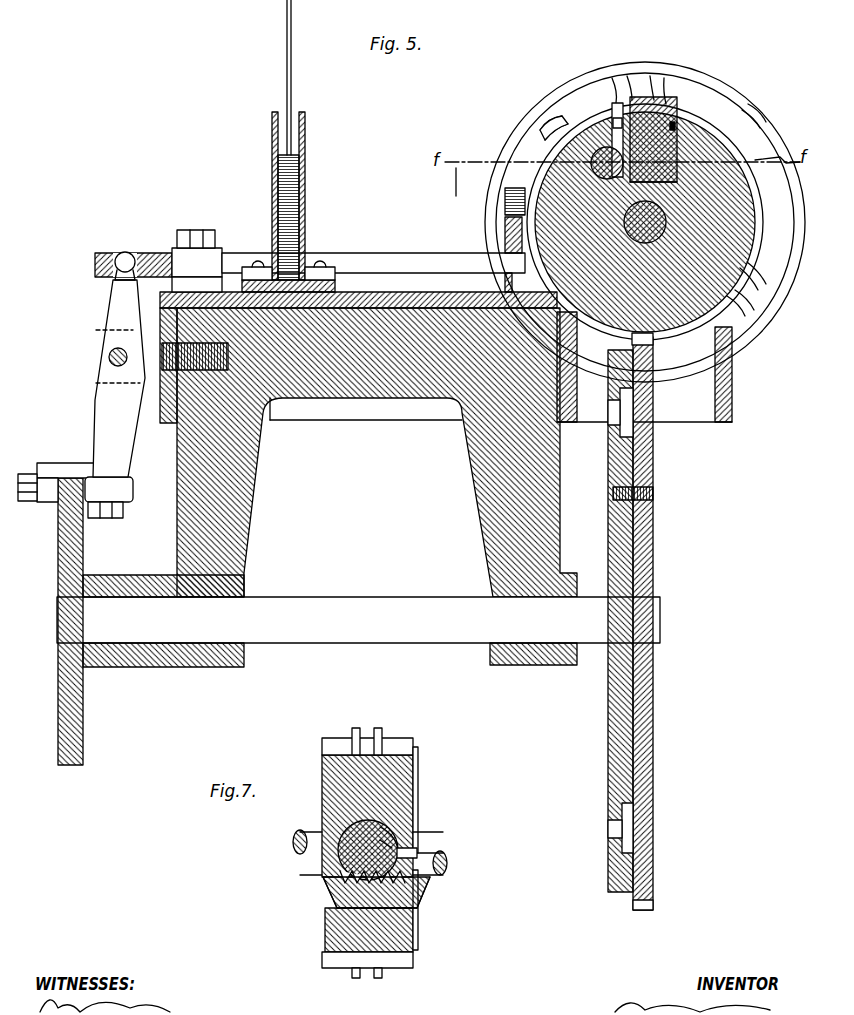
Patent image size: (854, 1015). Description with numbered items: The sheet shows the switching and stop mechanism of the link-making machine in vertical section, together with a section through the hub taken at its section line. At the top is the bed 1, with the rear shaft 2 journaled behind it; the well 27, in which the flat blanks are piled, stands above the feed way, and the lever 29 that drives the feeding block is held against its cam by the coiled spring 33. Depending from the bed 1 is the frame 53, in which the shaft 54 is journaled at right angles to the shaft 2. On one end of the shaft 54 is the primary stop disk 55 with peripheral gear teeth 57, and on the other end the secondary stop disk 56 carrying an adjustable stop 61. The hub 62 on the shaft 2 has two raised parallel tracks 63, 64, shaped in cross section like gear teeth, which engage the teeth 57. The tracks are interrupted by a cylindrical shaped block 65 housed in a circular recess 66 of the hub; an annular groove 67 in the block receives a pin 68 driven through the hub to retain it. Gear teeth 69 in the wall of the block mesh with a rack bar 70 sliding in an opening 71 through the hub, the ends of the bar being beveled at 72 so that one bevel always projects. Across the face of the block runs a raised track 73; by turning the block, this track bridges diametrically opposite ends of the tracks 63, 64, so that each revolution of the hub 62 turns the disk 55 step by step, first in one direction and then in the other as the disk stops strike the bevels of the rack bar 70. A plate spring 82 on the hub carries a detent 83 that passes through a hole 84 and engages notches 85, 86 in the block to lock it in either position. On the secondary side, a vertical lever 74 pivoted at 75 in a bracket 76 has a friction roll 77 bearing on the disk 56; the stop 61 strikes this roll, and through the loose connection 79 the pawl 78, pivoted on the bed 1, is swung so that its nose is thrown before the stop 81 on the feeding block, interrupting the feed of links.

In FIG. 5, the bed 1 is at (375, 292).
In FIG. 5, the shaft 2 is at (590, 143).
In FIG. 5, the well 27 is at (306, 178).
In FIG. 5, the lever 29 is at (373, 263).
In FIG. 5, the coiled spring 33 is at (506, 200).
In FIG. 5, the frame 53 is at (258, 485).
In FIG. 5, the shaft 54 is at (362, 604).
In FIG. 5, the primary stop disk 55 is at (655, 552).
In FIG. 5, the secondary stop disk 56 is at (84, 737).
In FIG. 5, the gear teeth 57 is at (653, 343).
In FIG. 5, the stop 61 is at (44, 466).
In FIG. 5, the hub 62 is at (748, 340).
In FIG. 7, the hub 62 is at (322, 760).
In FIG. 5, the raised track 63 is at (547, 162).
In FIG. 7, the raised track 63 is at (356, 728).
In FIG. 7, the raised track 64 is at (381, 730).
In FIG. 5, the cylindrical shaped block 65 is at (660, 110).
In FIG. 7, the cylindrical shaped block 65 is at (322, 848).
In FIG. 5, the circular recess 66 is at (678, 143).
In FIG. 7, the circular recess 66 is at (340, 872).
In FIG. 5, the annular groove 67 is at (616, 116).
In FIG. 5, the pin 68 is at (672, 128).
In FIG. 5, the gear teeth 69 is at (630, 212).
In FIG. 7, the gear teeth 69 is at (432, 856).
In FIG. 5, the rack bar 70 is at (592, 158).
In FIG. 7, the rack bar 70 is at (418, 905).
In FIG. 7, the opening 71 is at (336, 896).
In FIG. 7, the beveled portions 72 is at (330, 886).
In FIG. 5, the raised track 73 is at (618, 100).
In FIG. 5, the vertical lever 74 is at (110, 316).
In FIG. 5, the pivot 75 is at (110, 362).
In FIG. 5, the bracket 76 is at (153, 388).
In FIG. 5, the friction roll 77 is at (133, 494).
In FIG. 5, the pawl 78 is at (96, 256).
In FIG. 5, the loose connection 79 is at (118, 252).
In FIG. 5, the stop 81 is at (238, 258).
In FIG. 7, the plate spring 82 is at (418, 786).
In FIG. 7, the detent 83 is at (412, 852).
In FIG. 7, the hole 84 is at (392, 836).
In FIG. 7, the notch 85 is at (398, 845).
In FIG. 7, the notch 86 is at (348, 832).